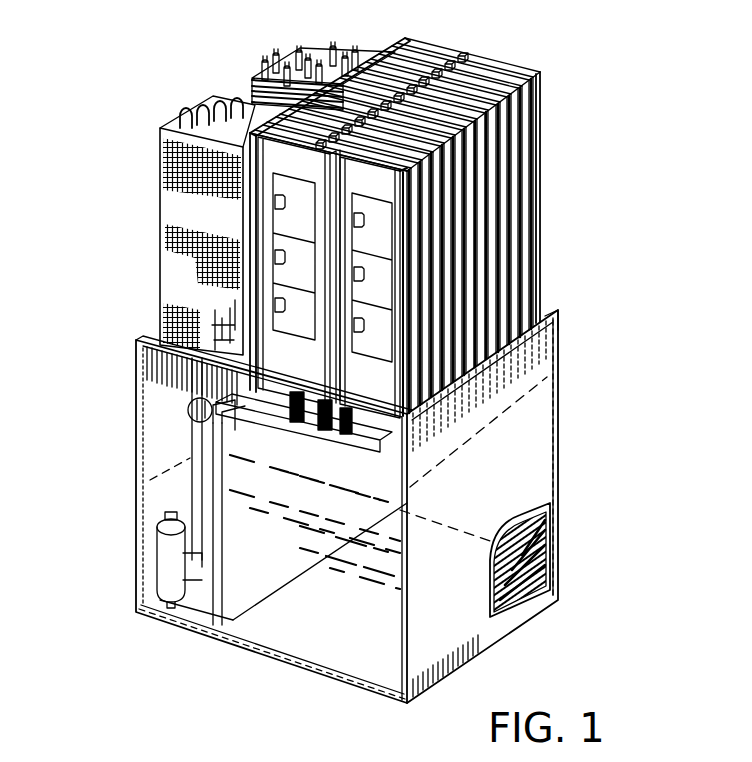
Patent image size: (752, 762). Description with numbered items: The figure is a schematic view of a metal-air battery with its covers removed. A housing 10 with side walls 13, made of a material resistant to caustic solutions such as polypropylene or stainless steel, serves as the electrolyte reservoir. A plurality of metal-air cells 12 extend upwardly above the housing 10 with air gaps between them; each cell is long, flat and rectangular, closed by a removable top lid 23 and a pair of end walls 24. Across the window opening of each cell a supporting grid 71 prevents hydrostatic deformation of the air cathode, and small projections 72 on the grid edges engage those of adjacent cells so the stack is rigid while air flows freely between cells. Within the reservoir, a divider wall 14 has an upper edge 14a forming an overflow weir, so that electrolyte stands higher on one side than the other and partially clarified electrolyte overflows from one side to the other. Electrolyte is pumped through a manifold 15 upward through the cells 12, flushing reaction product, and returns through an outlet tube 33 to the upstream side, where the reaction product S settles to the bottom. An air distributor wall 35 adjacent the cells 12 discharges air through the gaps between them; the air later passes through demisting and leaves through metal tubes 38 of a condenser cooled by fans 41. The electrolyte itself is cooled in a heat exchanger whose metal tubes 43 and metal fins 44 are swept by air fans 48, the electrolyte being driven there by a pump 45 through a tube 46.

The housing 10 is at (560, 398).
The metal-air cells 12 is at (542, 134).
The side walls 13 is at (525, 472).
The divider wall 14 is at (228, 578).
The upper edge 14a is at (186, 410).
The manifold 15 is at (136, 453).
The top lid 23 is at (497, 65).
The end walls 24 is at (545, 190).
The outlet tube 33 is at (553, 335).
The air distributor wall 35 is at (405, 41).
The metal tubes 38 is at (282, 62).
The fans 41 is at (350, 62).
The metal tubes 43 is at (176, 116).
The metal fins 44 is at (163, 205).
The pump 45 is at (165, 596).
The tube 46 is at (198, 452).
The air fans 48 is at (230, 110).
The supporting grid 71 is at (285, 258).
The projections 72 is at (365, 268).
The reaction product S is at (548, 560).